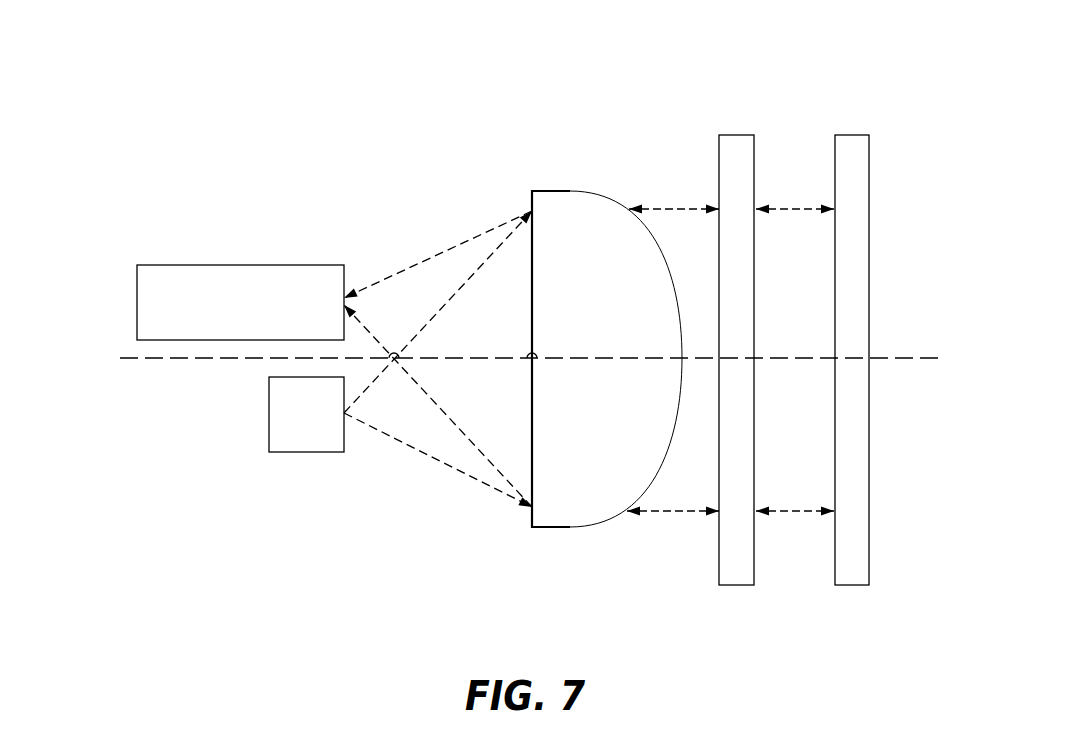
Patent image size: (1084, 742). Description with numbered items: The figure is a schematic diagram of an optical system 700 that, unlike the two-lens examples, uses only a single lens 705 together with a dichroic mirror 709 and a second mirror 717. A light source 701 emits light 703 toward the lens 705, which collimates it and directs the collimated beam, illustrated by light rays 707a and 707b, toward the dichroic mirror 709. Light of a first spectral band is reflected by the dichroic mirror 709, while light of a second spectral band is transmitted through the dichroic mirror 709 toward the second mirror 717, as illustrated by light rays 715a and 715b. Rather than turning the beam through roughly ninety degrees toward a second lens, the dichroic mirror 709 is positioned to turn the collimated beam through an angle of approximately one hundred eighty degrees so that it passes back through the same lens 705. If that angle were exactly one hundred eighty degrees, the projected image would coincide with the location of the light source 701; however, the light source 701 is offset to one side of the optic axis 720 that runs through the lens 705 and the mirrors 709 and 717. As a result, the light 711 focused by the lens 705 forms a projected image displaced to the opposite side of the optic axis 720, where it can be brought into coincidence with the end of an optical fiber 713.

The optical system 700 is at (297, 155).
The light source 701 is at (269, 452).
The light 703 is at (420, 452).
The lens 705 is at (550, 191).
The light ray 707a is at (692, 209).
The light ray 707b is at (678, 511).
The dichroic mirror 709 is at (730, 135).
The light 711 is at (447, 245).
The optical fiber 713 is at (193, 265).
The light ray 715a is at (805, 209).
The light ray 715b is at (793, 511).
The second mirror 717 is at (850, 135).
The optic axis 720 is at (137, 358).